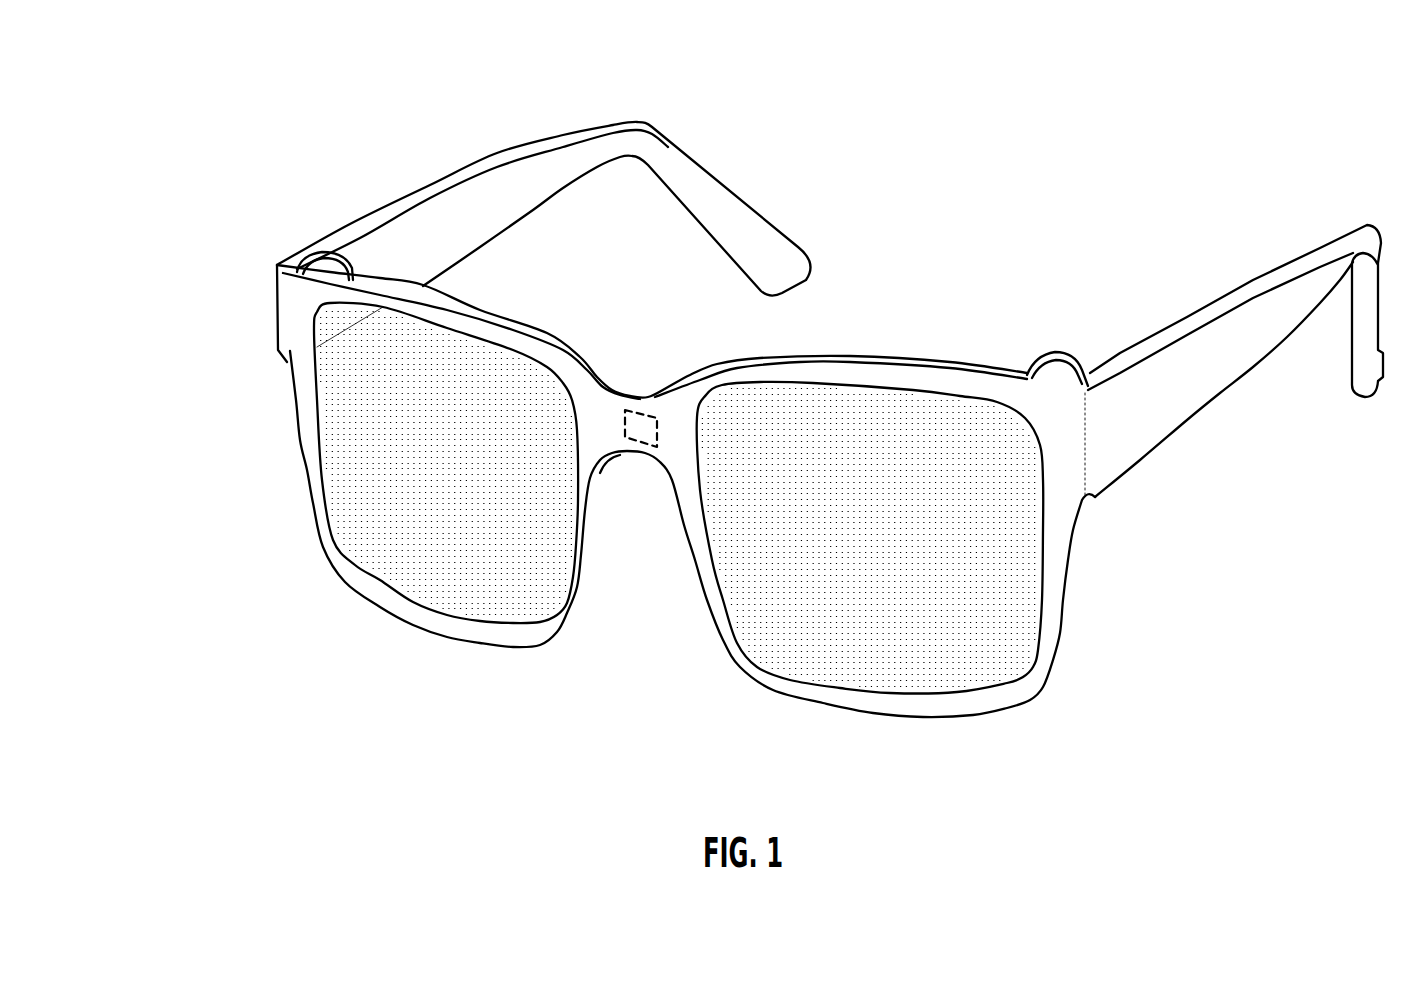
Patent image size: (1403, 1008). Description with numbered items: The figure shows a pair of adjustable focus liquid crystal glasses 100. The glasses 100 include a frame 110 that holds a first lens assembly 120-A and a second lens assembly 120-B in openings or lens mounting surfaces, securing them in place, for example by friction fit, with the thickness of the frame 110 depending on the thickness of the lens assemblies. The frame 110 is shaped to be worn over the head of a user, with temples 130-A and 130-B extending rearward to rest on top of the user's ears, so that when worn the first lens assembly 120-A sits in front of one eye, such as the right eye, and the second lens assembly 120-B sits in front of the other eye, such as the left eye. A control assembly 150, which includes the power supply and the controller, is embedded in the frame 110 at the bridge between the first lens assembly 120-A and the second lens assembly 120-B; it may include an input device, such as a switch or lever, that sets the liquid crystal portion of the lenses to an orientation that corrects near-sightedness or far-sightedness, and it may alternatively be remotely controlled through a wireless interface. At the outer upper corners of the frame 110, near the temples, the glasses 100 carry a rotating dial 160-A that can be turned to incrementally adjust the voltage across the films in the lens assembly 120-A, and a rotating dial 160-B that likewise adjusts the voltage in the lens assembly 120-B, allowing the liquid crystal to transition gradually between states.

The adjustable focus liquid crystal glasses 100 is at (176, 128).
The frame 110 is at (298, 312).
The first lens assembly 120-A is at (427, 529).
The second lens assembly 120-B is at (798, 636).
The temple 130-A is at (498, 191).
The temple 130-B is at (1193, 392).
The control assembly 150 is at (640, 422).
The rotating dial 160-A is at (323, 257).
The rotating dial 160-B is at (1055, 353).